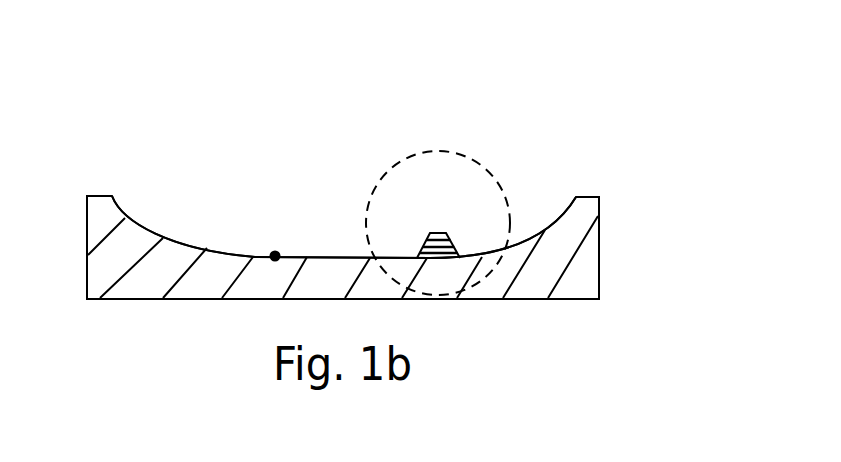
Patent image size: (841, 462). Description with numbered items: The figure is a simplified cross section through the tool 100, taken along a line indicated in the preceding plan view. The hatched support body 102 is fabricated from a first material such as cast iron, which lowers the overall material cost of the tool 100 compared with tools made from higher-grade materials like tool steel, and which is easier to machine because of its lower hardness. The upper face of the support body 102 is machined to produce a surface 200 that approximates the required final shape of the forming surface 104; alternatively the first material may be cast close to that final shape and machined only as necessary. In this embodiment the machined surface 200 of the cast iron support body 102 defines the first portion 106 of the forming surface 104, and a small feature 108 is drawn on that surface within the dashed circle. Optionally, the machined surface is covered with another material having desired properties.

The tool 100 is at (388, 228).
The support body 102 is at (573, 299).
The forming surface 104 is at (198, 190).
The first portion of the forming surface 106 is at (338, 258).
The protrusion / structure on surface 108 is at (442, 213).
The surface 200 is at (275, 256).